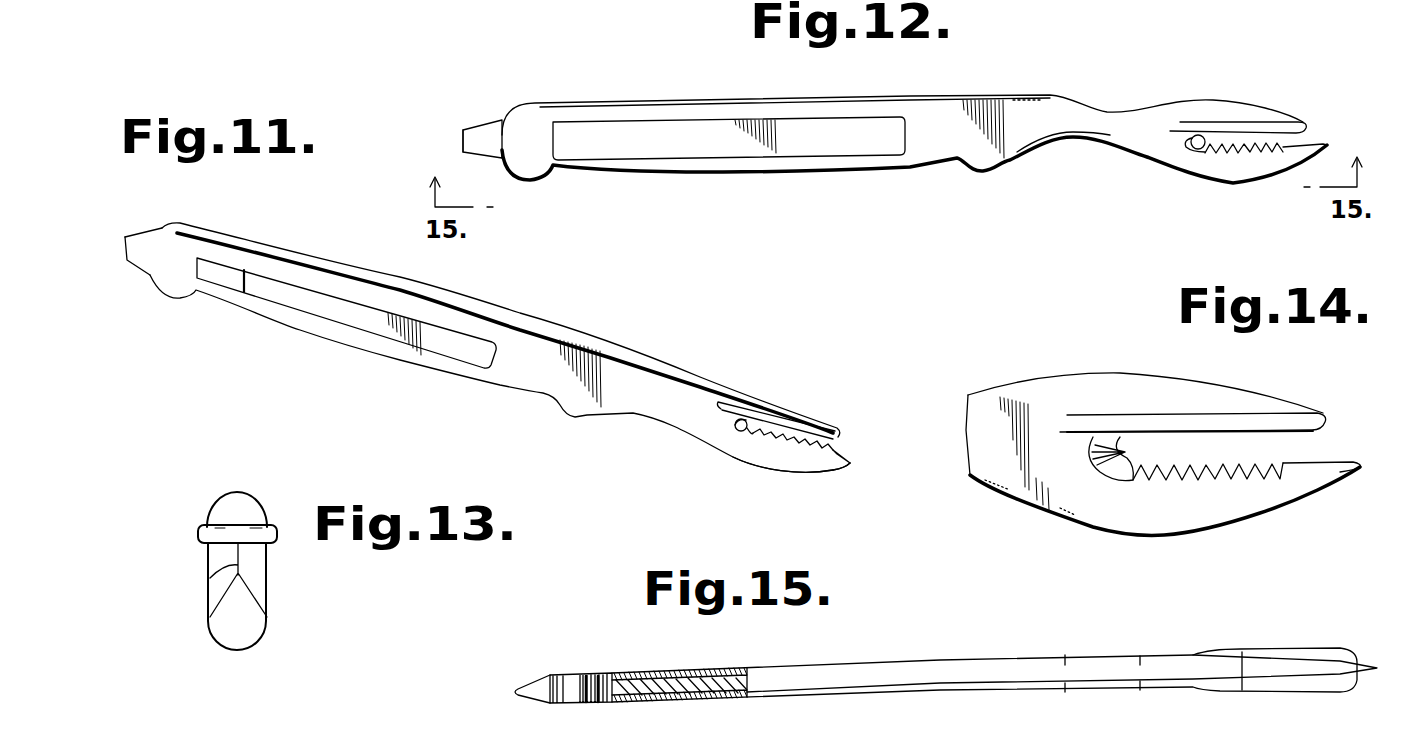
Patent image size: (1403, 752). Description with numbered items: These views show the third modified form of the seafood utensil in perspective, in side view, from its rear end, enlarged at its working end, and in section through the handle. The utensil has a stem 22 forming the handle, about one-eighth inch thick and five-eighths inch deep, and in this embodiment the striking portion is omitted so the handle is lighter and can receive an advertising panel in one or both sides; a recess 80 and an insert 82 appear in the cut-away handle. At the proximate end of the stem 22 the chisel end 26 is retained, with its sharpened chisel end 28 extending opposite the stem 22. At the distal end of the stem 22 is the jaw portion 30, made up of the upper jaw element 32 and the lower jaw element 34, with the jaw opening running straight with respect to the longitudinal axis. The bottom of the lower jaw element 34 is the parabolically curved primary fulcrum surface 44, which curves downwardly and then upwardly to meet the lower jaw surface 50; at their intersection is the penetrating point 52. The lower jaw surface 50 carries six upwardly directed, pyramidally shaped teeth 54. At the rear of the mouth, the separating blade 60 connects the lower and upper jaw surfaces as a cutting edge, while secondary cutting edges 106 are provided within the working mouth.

In FIG. 11, the stem 22 is at (360, 272).
In FIG. 12, the stem 22 is at (793, 175).
In FIG. 11, the chisel end 26 is at (140, 232).
In FIG. 12, the chisel end 26 is at (493, 120).
In FIG. 15, the chisel end 26 is at (530, 683).
In FIG. 11, the sharpened chisel end 28 is at (140, 258).
In FIG. 12, the sharpened chisel end 28 is at (473, 130).
In FIG. 15, the sharpened chisel end 28 is at (538, 703).
In FIG. 14, the jaw portion 30 is at (1037, 508).
In FIG. 11, the upper jaw element 32 is at (783, 400).
In FIG. 12, the upper jaw element 32 is at (1205, 98).
In FIG. 13, the upper jaw element 32 is at (237, 492).
In FIG. 14, the upper jaw element 32 is at (1113, 373).
In FIG. 14, the lower jaw element 34 is at (1068, 477).
In FIG. 13, the primary fulcrum surface 44 is at (245, 652).
In FIG. 15, the primary fulcrum surface 44 is at (1242, 690).
In FIG. 11, the lower jaw surface 50 is at (838, 453).
In FIG. 14, the lower jaw surface 50 is at (1318, 465).
In FIG. 11, the penetrating point 52 is at (856, 462).
In FIG. 12, the penetrating point 52 is at (1323, 144).
In FIG. 14, the penetrating point 52 is at (1367, 473).
In FIG. 11, the teeth 54 is at (793, 443).
In FIG. 12, the teeth 54 is at (1257, 143).
In FIG. 14, the teeth 54 is at (1225, 463).
In FIG. 12, the separating blade 60 is at (1192, 145).
In FIG. 13, the separating blade 60 is at (210, 577).
In FIG. 14, the separating blade 60 is at (1140, 437).
In FIG. 11, the recess 80 is at (325, 310).
In FIG. 12, the recess 80 is at (665, 127).
In FIG. 15, the recess 80 is at (665, 673).
In FIG. 11, the latch insert 82 is at (232, 273).
In FIG. 15, the latch insert 82 is at (707, 675).
In FIG. 11, the secondary cutting edges 106 is at (750, 430).
In FIG. 13, the secondary cutting edges 106 is at (198, 535).
In FIG. 14, the secondary cutting edges 106 is at (1253, 413).
In FIG. 15, the secondary cutting edges 106 is at (1270, 647).